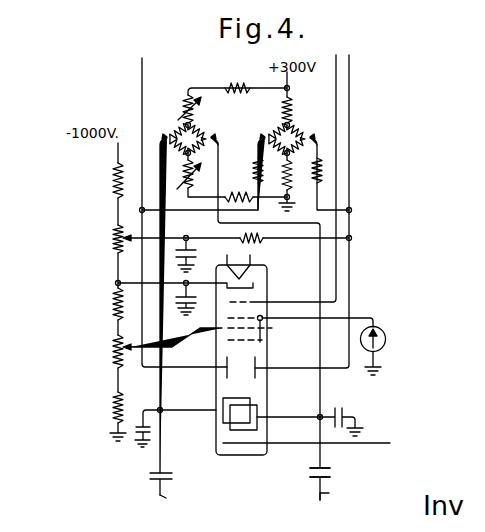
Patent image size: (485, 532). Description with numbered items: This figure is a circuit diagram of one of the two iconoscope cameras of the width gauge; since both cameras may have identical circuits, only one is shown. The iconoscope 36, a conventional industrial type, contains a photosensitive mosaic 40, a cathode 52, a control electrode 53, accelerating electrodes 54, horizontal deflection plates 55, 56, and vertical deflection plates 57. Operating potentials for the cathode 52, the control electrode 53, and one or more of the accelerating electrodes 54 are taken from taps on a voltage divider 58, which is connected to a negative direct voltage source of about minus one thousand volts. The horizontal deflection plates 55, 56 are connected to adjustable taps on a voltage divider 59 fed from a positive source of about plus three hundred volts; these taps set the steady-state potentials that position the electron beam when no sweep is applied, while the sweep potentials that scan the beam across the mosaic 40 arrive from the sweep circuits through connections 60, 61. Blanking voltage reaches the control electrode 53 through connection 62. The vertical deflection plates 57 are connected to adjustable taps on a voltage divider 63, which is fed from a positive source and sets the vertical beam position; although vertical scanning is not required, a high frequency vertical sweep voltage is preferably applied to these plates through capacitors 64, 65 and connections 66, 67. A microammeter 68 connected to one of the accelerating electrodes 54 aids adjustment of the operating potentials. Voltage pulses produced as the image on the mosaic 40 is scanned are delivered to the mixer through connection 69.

The iconoscope 36 is at (216, 382).
The photosensitive mosaic 40 is at (255, 443).
The cathode 52 is at (258, 290).
The control electrode 53 is at (252, 303).
The accelerating electrodes 54 is at (268, 331).
The horizontal deflection plate 55 is at (225, 366).
The horizontal deflection plate 56 is at (268, 378).
The vertical deflection plates 57 is at (255, 406).
The voltage divider 58 is at (118, 274).
The voltage divider 59 is at (294, 107).
The connection 60 is at (142, 62).
The connection 61 is at (349, 67).
The connection 62 is at (336, 83).
The voltage divider 63 is at (179, 111).
The capacitor 64 is at (150, 474).
The capacitor 65 is at (332, 472).
The connection 66 is at (175, 503).
The connection 67 is at (336, 497).
The microammeter 68 is at (386, 339).
The connection 69 is at (373, 443).